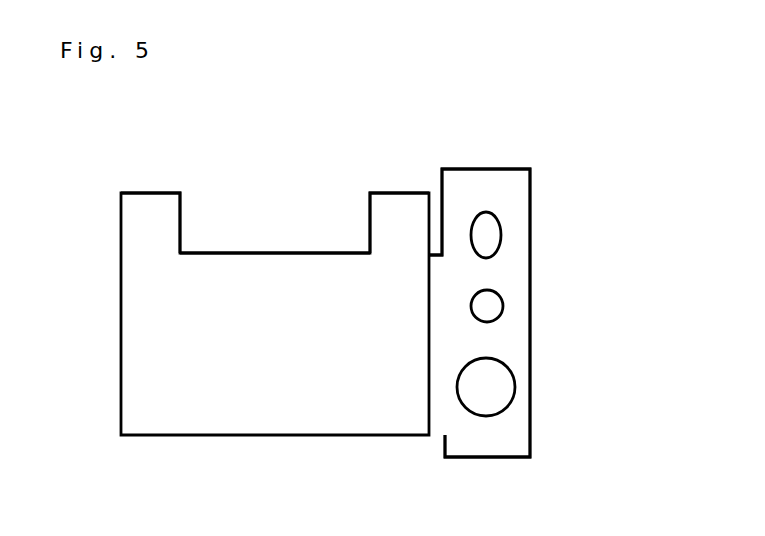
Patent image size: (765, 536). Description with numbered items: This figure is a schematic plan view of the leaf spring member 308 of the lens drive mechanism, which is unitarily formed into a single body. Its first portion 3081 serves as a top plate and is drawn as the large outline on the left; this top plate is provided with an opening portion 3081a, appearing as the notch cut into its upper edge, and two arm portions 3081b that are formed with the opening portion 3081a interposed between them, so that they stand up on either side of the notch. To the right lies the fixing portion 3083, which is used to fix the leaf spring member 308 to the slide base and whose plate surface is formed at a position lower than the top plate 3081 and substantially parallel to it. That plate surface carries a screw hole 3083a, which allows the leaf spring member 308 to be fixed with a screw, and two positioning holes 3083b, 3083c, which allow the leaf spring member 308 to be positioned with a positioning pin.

The leaf spring member 308 is at (492, 137).
The first portion 3081 is at (284, 428).
The opening portion 3081a is at (272, 225).
The arm portions 3081b is at (150, 196).
The fixing portion 3083 is at (517, 187).
The screw hole 3083a is at (487, 390).
The positioning hole 3083b is at (487, 306).
The positioning hole 3083c is at (486, 236).